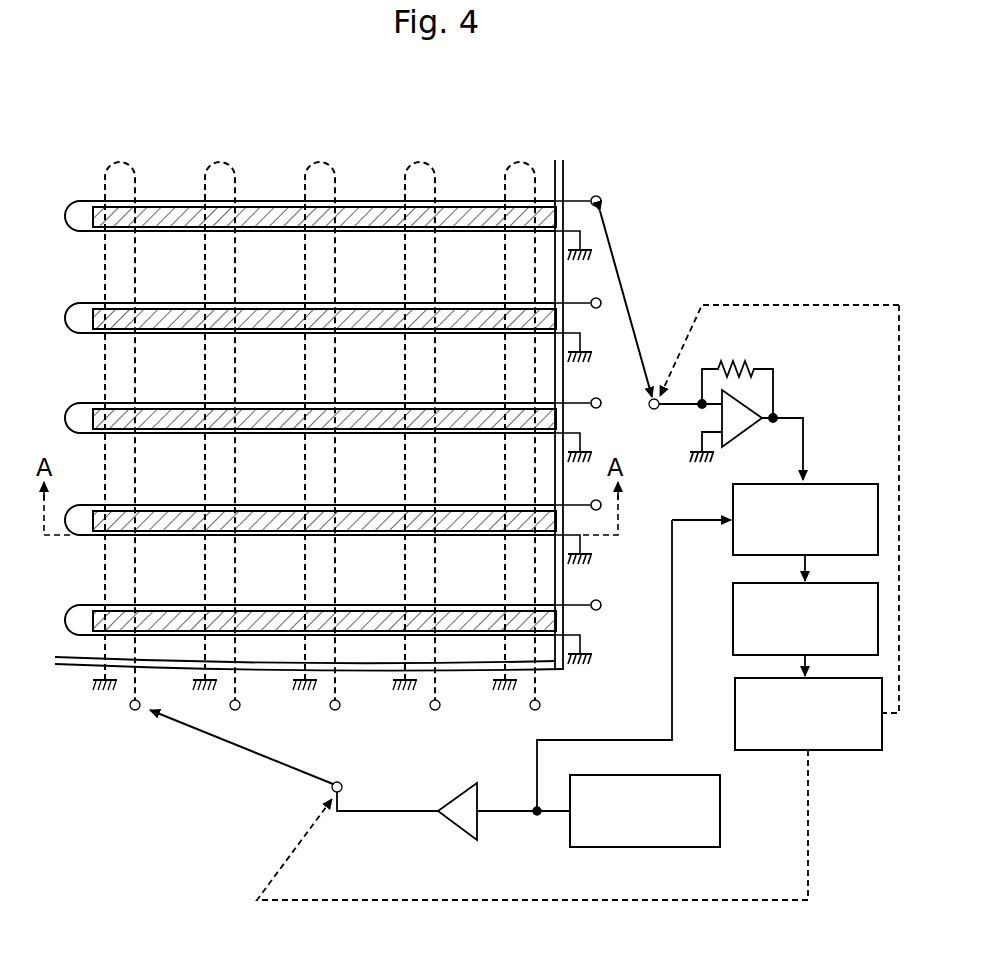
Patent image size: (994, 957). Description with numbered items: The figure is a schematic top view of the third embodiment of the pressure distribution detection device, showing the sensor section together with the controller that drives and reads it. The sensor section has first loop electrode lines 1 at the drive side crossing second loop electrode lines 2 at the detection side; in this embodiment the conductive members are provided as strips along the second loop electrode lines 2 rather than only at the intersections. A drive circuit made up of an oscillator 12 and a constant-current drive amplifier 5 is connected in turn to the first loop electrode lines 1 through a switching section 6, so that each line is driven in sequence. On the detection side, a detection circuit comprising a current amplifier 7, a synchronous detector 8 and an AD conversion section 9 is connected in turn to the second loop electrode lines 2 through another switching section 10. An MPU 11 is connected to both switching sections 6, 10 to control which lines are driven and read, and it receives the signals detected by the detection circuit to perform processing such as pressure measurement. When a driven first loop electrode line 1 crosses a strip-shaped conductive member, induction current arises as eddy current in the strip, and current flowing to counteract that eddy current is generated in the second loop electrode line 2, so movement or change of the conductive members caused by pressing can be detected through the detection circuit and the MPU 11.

The first loop electrode lines 1 is at (127, 161).
The second loop electrode lines 2 is at (70, 212).
The constant-current drive amplifier 5 is at (453, 828).
The switching section 6 is at (263, 757).
The current amplifier 7 is at (786, 380).
The synchronous detector 8 is at (733, 540).
The AD conversion section 9 is at (733, 625).
The switching section 10 is at (622, 284).
The MPU 11 is at (858, 752).
The oscillator 12 is at (721, 812).